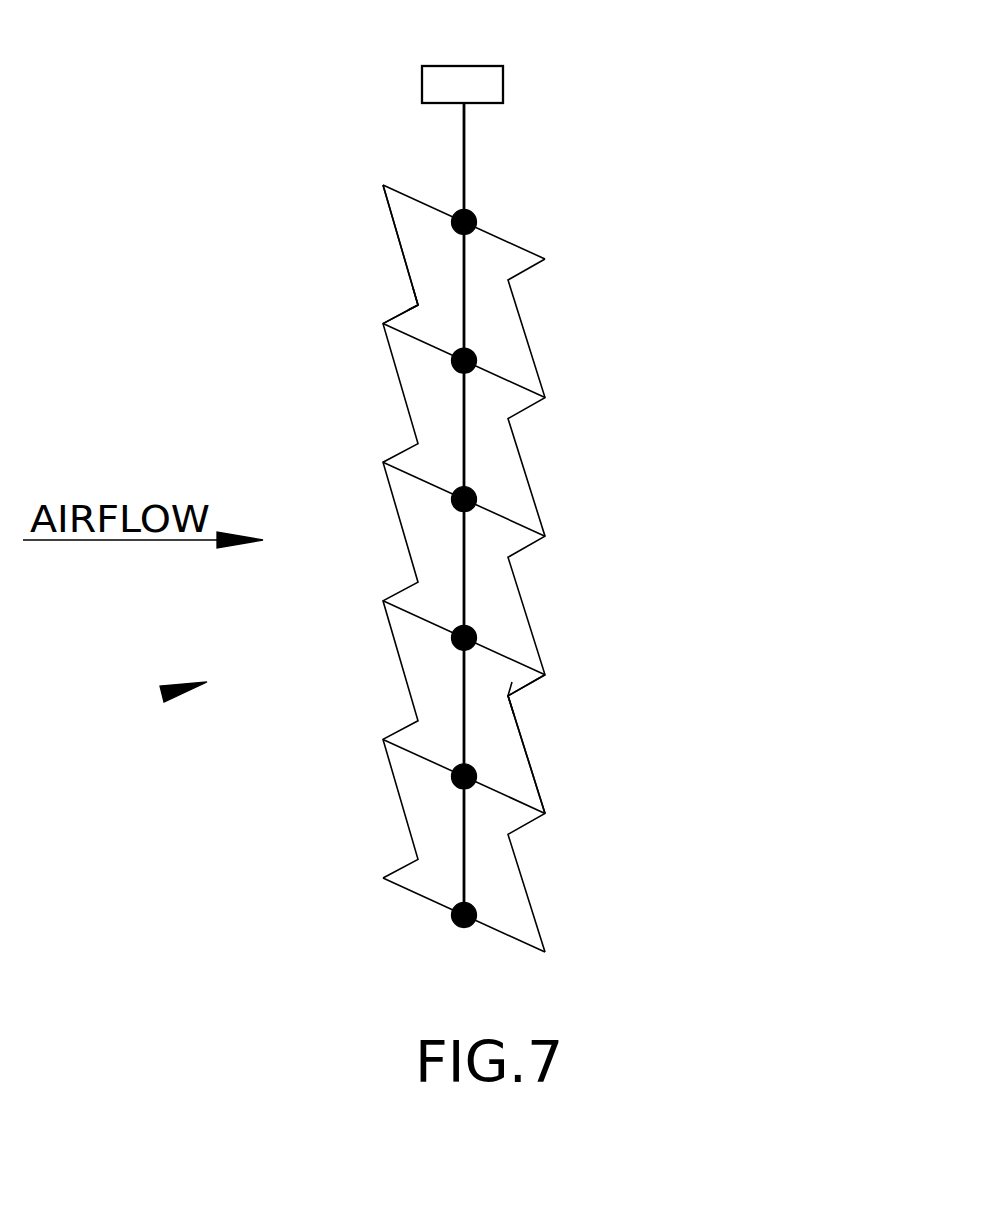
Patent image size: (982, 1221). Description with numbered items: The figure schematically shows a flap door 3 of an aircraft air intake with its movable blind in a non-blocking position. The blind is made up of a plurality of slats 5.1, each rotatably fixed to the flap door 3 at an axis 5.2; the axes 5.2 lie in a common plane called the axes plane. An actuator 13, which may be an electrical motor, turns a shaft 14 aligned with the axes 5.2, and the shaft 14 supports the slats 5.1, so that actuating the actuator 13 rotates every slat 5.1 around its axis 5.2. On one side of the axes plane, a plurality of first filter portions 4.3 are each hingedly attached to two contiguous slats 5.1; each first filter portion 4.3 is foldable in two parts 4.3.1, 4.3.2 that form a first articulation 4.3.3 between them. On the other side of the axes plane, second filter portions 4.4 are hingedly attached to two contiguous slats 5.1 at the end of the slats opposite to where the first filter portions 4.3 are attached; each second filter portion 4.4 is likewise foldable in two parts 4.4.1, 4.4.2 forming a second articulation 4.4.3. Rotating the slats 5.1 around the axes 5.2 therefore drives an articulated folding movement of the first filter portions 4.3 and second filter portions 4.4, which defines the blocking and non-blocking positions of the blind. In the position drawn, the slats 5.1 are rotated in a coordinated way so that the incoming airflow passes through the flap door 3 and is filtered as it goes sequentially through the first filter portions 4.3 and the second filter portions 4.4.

The flap door 3 is at (162, 694).
The actuator 13 is at (464, 65).
The shaft 14 is at (470, 317).
The first filter portion 4.3 is at (197, 195).
The first part of first filter portion 4.3.1 is at (401, 250).
The second part of first filter portion 4.3.2 is at (406, 312).
The first articulation 4.3.3 is at (414, 297).
The second filter portion 4.4 is at (747, 632).
The first part of second filter portion 4.4.1 is at (531, 766).
The second part of second filter portion 4.4.2 is at (541, 682).
The second articulation 4.4.3 is at (521, 718).
The slat 5.1 is at (523, 252).
The axis 5.2 is at (472, 211).